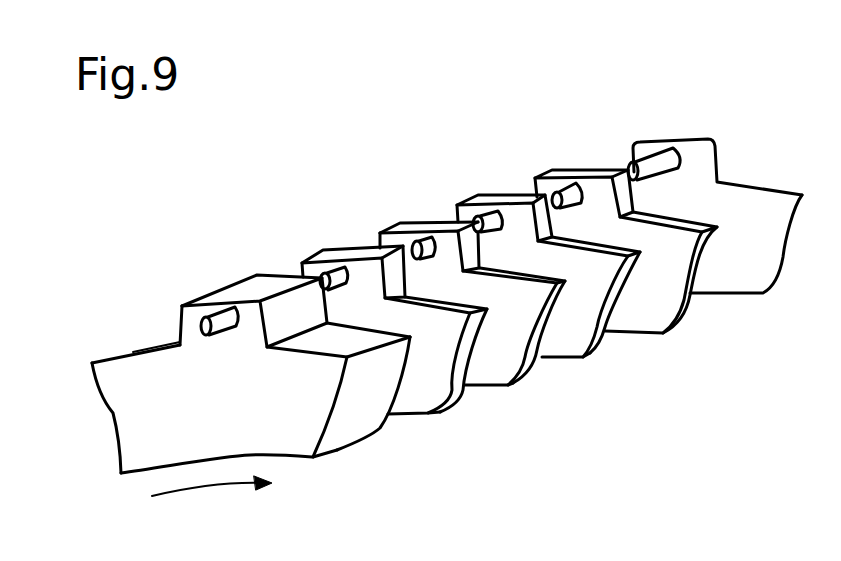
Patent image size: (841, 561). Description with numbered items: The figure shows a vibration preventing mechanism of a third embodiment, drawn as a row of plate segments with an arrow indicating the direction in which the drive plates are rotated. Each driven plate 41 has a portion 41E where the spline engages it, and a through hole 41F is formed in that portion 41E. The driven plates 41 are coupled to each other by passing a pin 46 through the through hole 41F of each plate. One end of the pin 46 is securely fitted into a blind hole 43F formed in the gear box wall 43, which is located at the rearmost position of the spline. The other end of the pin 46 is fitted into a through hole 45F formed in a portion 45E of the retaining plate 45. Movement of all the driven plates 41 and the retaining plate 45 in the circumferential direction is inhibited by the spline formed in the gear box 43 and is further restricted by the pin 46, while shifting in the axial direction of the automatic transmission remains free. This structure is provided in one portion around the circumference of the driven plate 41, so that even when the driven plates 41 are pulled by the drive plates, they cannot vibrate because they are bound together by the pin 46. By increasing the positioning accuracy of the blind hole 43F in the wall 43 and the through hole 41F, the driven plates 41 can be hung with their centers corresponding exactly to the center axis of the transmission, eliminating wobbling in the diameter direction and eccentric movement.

The driven plates 41 is at (509, 303).
The portion of driven plate 41E is at (540, 172).
The through hole 41F is at (485, 208).
The gear box wall 43 is at (718, 243).
The blind hole 43F is at (666, 148).
The retaining plate 45 is at (212, 358).
The portion of retaining plate 45E is at (226, 290).
The through hole 45F is at (231, 330).
The pin 46 is at (180, 322).